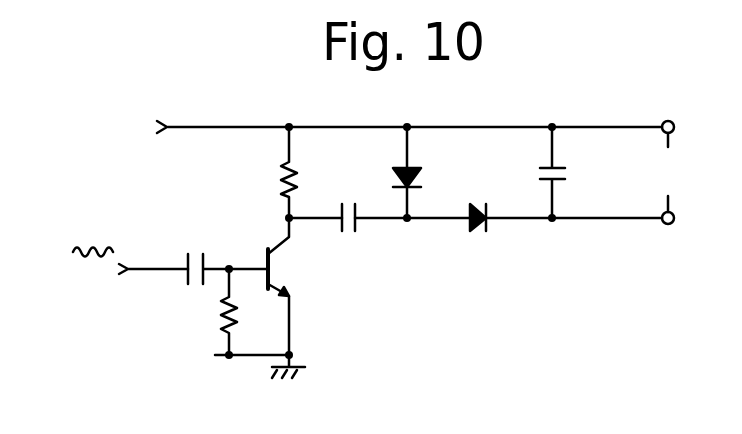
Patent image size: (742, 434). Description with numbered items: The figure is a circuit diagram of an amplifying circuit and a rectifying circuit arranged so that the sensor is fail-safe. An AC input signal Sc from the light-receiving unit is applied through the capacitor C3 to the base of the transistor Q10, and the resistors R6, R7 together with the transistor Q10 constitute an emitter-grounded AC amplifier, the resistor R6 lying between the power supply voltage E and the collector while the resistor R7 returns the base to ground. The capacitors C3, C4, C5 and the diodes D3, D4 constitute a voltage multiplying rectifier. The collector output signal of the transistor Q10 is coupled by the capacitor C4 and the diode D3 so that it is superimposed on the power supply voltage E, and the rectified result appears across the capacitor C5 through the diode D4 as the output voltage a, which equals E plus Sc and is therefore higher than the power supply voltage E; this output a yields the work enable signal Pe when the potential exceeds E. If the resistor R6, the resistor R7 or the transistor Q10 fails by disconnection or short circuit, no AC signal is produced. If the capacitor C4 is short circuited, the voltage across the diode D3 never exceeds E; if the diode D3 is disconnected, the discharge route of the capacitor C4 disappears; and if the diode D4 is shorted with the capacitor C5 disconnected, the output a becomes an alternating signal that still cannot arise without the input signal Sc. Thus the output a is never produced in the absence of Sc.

The power supply voltage E is at (149, 129).
The resistor R6 is at (300, 186).
The capacitor C4 is at (348, 236).
The diode D3 is at (418, 182).
The diode D4 is at (476, 233).
The capacitor C5 is at (570, 172).
The output voltage of the rectifying circuit a is at (692, 172).
The AC input signal Sc is at (130, 273).
The capacitor C3 is at (224, 253).
The resistor R7 is at (220, 325).
The transistor Q10 is at (283, 272).